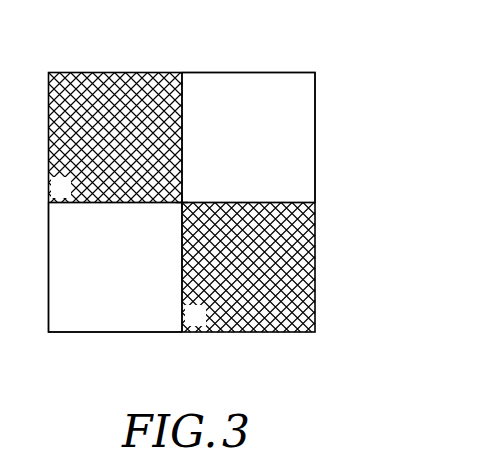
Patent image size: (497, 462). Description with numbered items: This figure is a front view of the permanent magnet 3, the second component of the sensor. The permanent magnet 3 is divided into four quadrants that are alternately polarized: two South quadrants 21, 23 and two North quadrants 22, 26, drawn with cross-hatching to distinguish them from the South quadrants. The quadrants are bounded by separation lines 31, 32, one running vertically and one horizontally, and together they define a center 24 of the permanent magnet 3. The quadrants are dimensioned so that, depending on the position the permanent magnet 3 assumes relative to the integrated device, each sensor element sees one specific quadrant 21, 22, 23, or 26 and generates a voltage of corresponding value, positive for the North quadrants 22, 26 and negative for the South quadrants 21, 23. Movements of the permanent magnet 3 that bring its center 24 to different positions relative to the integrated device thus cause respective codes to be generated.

The permanent magnet 3 is at (320, 143).
The quadrant 21 is at (248, 85).
The quadrant 22 is at (112, 85).
The quadrant 23 is at (176, 208).
The center 24 is at (123, 322).
The quadrant 26 is at (255, 317).
The separation line 31 is at (186, 106).
The separation line 32 is at (289, 198).